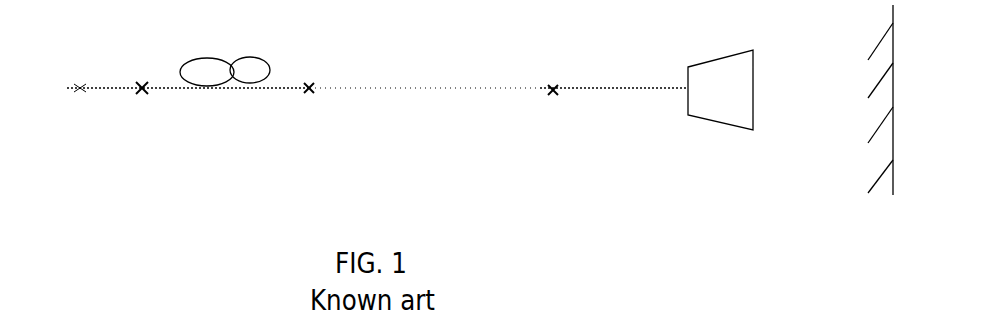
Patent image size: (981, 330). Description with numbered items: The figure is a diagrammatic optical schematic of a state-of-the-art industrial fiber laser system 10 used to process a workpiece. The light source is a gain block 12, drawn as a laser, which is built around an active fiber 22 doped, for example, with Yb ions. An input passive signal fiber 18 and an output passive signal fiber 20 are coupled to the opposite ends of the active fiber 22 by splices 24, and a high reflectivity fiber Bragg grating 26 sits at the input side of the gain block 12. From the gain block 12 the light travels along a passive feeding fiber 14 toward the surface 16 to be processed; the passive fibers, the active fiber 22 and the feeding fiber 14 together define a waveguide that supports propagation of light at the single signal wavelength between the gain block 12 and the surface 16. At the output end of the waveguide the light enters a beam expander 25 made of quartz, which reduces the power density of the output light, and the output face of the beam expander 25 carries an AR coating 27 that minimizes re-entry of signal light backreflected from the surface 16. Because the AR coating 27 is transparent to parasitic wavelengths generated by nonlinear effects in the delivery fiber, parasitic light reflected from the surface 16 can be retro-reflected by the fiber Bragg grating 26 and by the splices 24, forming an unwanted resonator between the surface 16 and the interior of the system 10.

The fiber laser system 10 is at (548, 132).
The gain block 12 is at (190, 126).
The feeding fiber 14 is at (628, 82).
The surface 16 is at (913, 115).
The input passive signal fiber 18 is at (118, 89).
The output passive signal fiber 20 is at (335, 90).
The active fiber 22 is at (232, 73).
The splices 24 is at (140, 86).
The beam expander 25 is at (735, 103).
The high reflectivity fiber Bragg grating 26 is at (92, 88).
The AR coating 27 is at (753, 82).